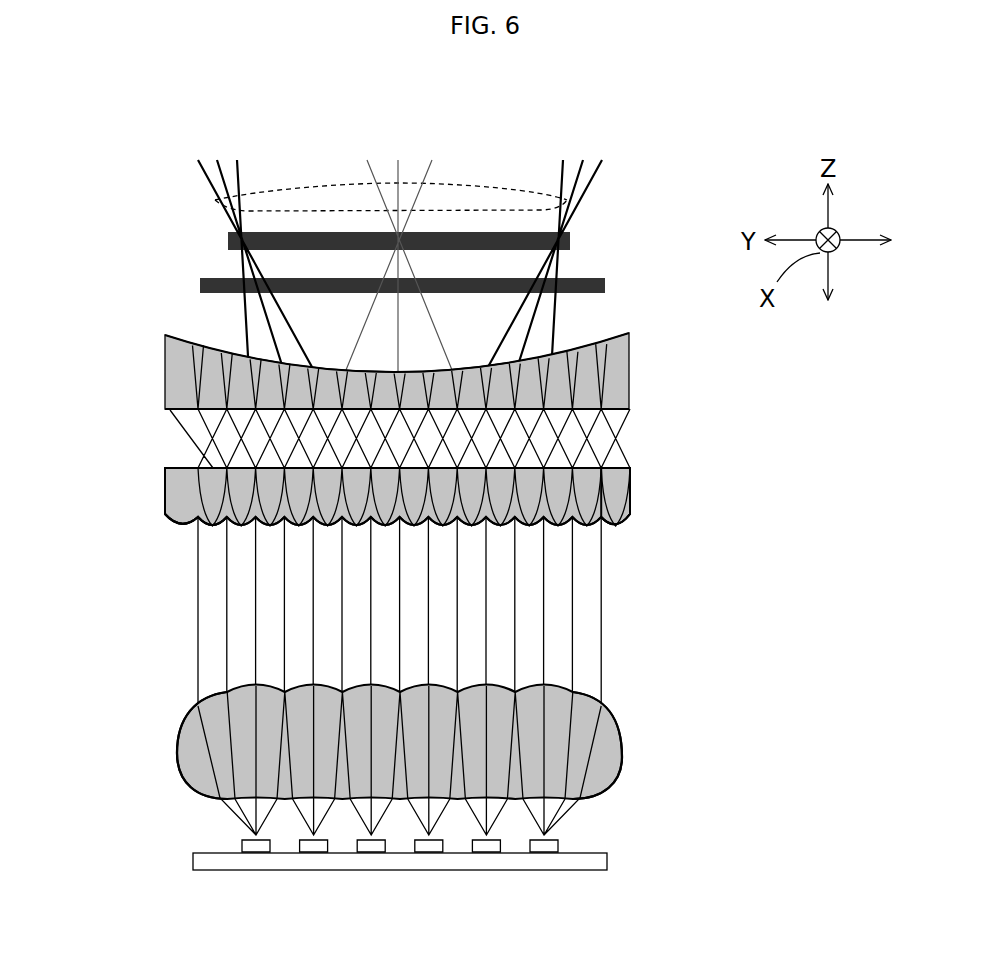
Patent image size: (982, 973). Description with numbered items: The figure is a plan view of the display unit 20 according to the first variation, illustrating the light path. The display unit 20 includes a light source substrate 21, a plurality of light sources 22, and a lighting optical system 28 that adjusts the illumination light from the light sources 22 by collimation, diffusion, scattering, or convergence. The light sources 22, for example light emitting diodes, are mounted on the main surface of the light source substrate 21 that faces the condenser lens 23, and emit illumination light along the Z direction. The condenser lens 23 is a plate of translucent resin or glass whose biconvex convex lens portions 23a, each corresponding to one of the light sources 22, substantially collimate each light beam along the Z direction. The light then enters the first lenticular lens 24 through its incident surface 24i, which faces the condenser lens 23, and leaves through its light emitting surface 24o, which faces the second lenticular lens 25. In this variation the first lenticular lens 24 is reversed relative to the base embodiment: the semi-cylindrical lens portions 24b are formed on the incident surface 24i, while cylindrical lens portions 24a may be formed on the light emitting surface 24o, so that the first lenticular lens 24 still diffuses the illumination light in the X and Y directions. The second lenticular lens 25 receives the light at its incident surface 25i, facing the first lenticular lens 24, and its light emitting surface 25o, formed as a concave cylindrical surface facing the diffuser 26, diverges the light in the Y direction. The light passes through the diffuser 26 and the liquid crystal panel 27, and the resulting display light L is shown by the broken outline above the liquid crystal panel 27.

The display unit 20 is at (651, 131).
The light source substrate 21 is at (609, 852).
The light source 22 is at (308, 845).
The condenser lens 23 is at (615, 724).
The convex lens portion 23a is at (197, 750).
The first lenticular lens 24 is at (634, 502).
The cylindrical lens portion 24a is at (620, 482).
The cylindrical lens portion 24b is at (212, 528).
The incident surface 24i is at (617, 534).
The light emitting surface 24o is at (614, 468).
The second lenticular lens 25 is at (634, 352).
The incident surface 25i is at (167, 404).
The light emitting surface 25o is at (167, 337).
The diffuser 26 is at (608, 287).
The liquid crystal panel 27 is at (574, 242).
The lighting optical system 28 is at (113, 205).
The display light L is at (213, 200).